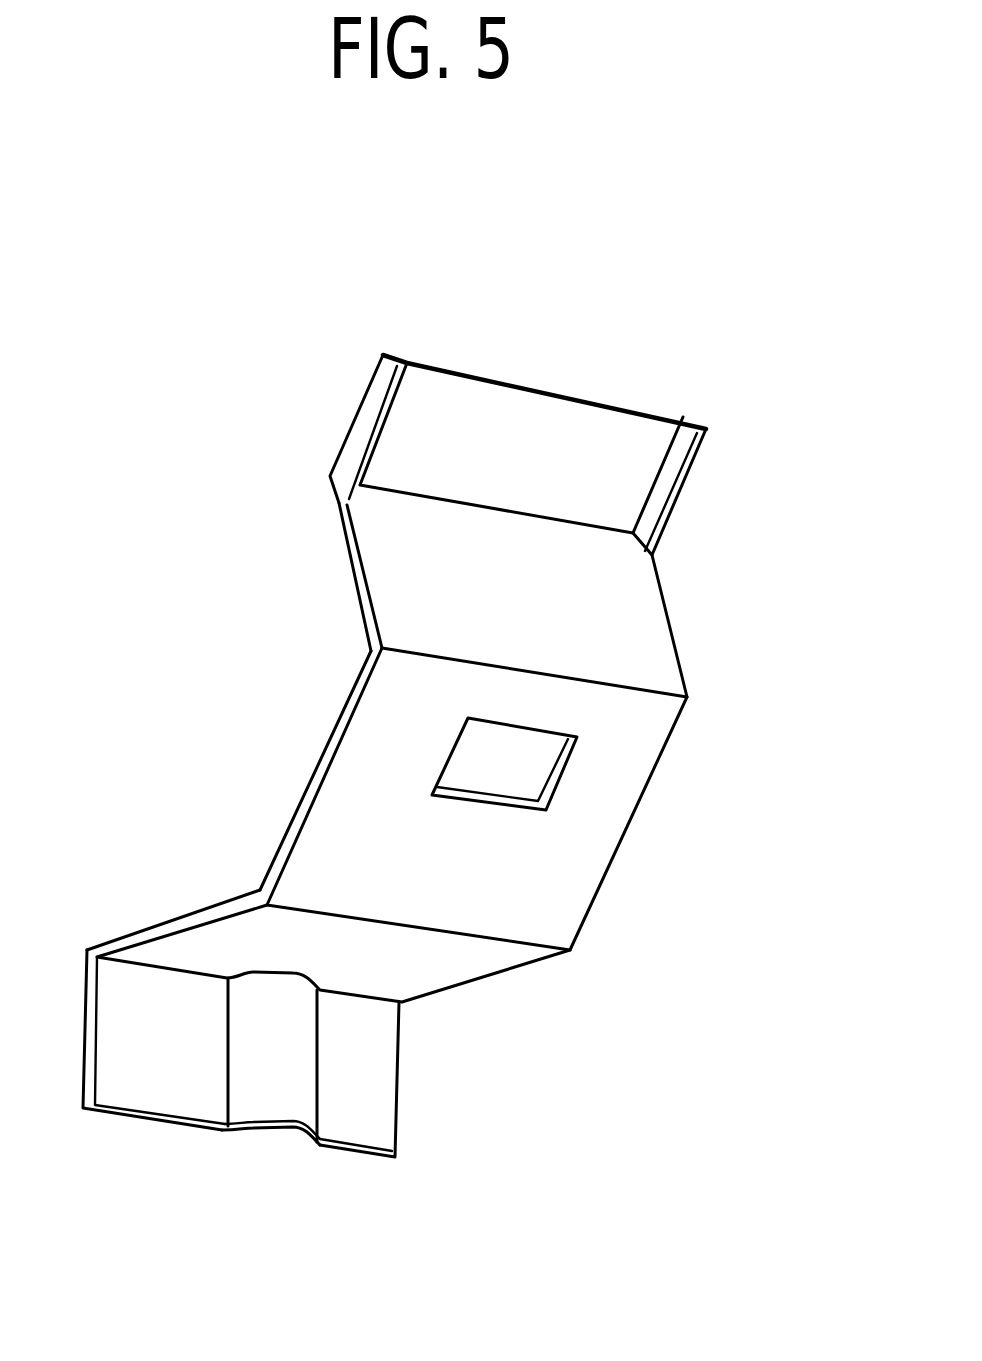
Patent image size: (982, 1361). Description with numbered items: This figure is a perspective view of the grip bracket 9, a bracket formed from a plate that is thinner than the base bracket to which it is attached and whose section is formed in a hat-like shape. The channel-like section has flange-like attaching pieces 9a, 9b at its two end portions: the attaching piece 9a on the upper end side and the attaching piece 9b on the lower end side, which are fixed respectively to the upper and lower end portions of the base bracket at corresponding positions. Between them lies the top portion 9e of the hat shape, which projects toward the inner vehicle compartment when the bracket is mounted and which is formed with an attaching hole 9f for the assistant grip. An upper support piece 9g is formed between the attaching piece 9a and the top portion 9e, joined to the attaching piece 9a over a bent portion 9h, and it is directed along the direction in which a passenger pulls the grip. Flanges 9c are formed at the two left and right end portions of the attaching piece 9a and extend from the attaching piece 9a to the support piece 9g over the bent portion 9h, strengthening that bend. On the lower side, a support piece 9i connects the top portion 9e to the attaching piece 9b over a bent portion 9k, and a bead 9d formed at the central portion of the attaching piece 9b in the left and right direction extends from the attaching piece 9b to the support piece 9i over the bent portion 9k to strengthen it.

The grip bracket 9 is at (675, 330).
The attaching piece 9a is at (532, 417).
The attaching piece 9b is at (358, 1127).
The flange 9c is at (358, 433).
The bead 9d is at (270, 1103).
The top portion 9e is at (612, 815).
The attaching hole 9f is at (493, 750).
The support piece 9g is at (644, 643).
The bent portion 9h is at (425, 495).
The support piece 9i is at (448, 970).
The bent portion 9k is at (145, 960).